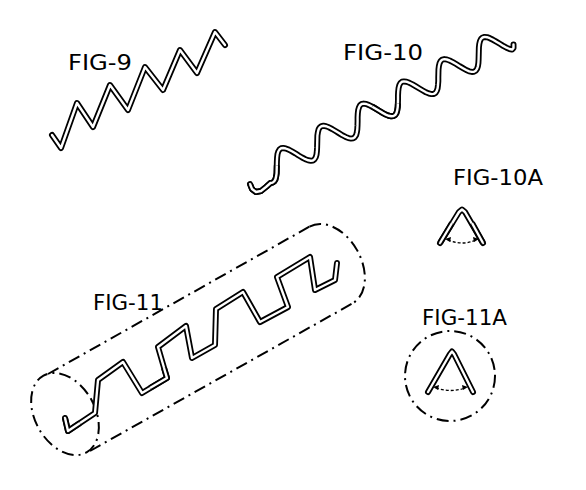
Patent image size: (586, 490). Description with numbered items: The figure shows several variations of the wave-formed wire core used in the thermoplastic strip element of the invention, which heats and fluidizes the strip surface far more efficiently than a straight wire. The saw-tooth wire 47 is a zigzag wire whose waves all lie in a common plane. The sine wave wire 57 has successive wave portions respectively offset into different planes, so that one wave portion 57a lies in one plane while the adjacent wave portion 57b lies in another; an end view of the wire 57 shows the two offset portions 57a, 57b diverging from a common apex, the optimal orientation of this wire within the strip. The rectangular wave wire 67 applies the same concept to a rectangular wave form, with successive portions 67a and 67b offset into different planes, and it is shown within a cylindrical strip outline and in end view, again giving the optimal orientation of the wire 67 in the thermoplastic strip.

In FIG. 9, the zigzag wire spring 47 is at (169, 84).
In FIG. 10, the sinuous wire spring 57 is at (351, 108).
In FIG. 10A, the sinuous wire spring 57 is at (473, 208).
In FIG. 10, the first end of spring 57a is at (275, 182).
In FIG. 10A, the first end of spring 57a is at (446, 234).
In FIG. 10, the bend of spring 57b is at (396, 119).
In FIG. 10A, the bend of spring 57b is at (480, 232).
In FIG. 11, the square-wave wire spring 67 is at (287, 322).
In FIG. 11, the first end of spring 67a is at (64, 433).
In FIG. 11, the bend of spring 67b is at (168, 380).